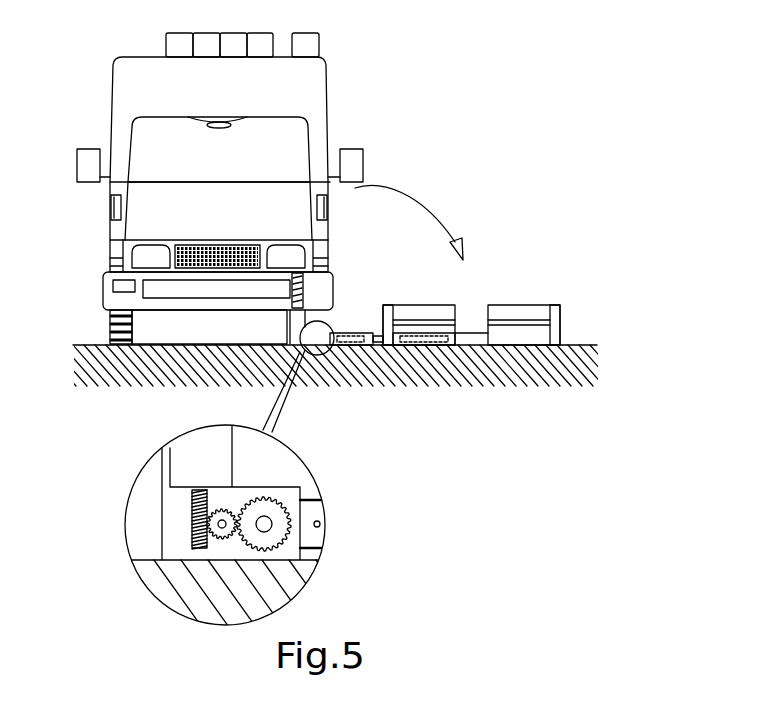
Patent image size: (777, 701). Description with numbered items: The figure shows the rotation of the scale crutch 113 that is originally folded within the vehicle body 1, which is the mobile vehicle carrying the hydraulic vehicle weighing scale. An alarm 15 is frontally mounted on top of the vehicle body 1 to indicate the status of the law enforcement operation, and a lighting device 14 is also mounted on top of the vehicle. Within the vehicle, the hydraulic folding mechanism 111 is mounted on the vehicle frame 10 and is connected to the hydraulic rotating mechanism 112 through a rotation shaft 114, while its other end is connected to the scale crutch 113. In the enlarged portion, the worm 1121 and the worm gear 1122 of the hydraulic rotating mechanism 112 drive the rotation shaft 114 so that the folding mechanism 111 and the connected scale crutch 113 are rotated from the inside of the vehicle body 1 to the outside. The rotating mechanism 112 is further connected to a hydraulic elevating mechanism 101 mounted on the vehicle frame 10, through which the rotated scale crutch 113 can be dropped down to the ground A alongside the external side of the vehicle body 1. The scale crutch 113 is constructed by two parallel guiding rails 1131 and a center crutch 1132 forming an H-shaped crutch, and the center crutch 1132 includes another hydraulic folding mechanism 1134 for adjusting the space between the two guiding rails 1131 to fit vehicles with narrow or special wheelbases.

The vehicle body 1 is at (127, 102).
The vehicle frame 10 is at (292, 277).
The lighting device 14 is at (320, 32).
The alarm 15 is at (175, 33).
The hydraulic elevating mechanism 101 is at (409, 223).
The hydraulic folding mechanism 111 is at (356, 348).
The hydraulic rotating mechanism 112 is at (258, 312).
The scale crutch 113 is at (575, 297).
The guiding rails 1131 is at (422, 305).
The center crutch 1132 is at (468, 335).
The hydraulic folding mechanism 1134 is at (430, 348).
The rotation shaft 114 is at (270, 537).
The worm 1121 is at (190, 513).
The worm gear 1122 is at (220, 537).
The ground A is at (586, 347).